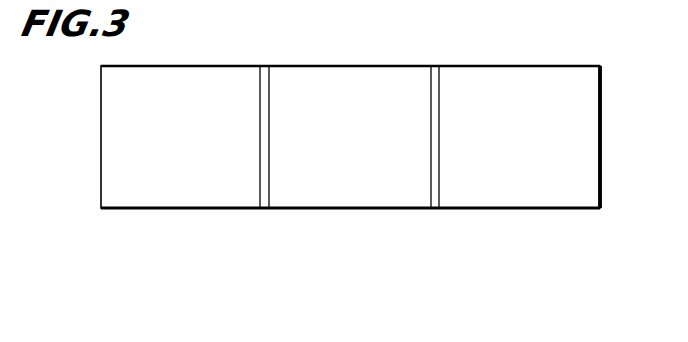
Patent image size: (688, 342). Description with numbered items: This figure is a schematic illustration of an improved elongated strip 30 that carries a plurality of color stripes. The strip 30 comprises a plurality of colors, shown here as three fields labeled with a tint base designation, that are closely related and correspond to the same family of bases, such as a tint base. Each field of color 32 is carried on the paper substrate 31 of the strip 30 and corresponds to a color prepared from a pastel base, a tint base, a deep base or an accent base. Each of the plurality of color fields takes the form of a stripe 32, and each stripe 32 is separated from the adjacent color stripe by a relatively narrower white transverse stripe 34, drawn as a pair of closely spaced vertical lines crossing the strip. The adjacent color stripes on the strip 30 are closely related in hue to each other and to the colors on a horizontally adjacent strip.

The elongated strip 30 is at (527, 64).
The paper substrate 31 is at (575, 67).
The color stripe 32 is at (299, 181).
The white transverse stripe 34 is at (435, 209).